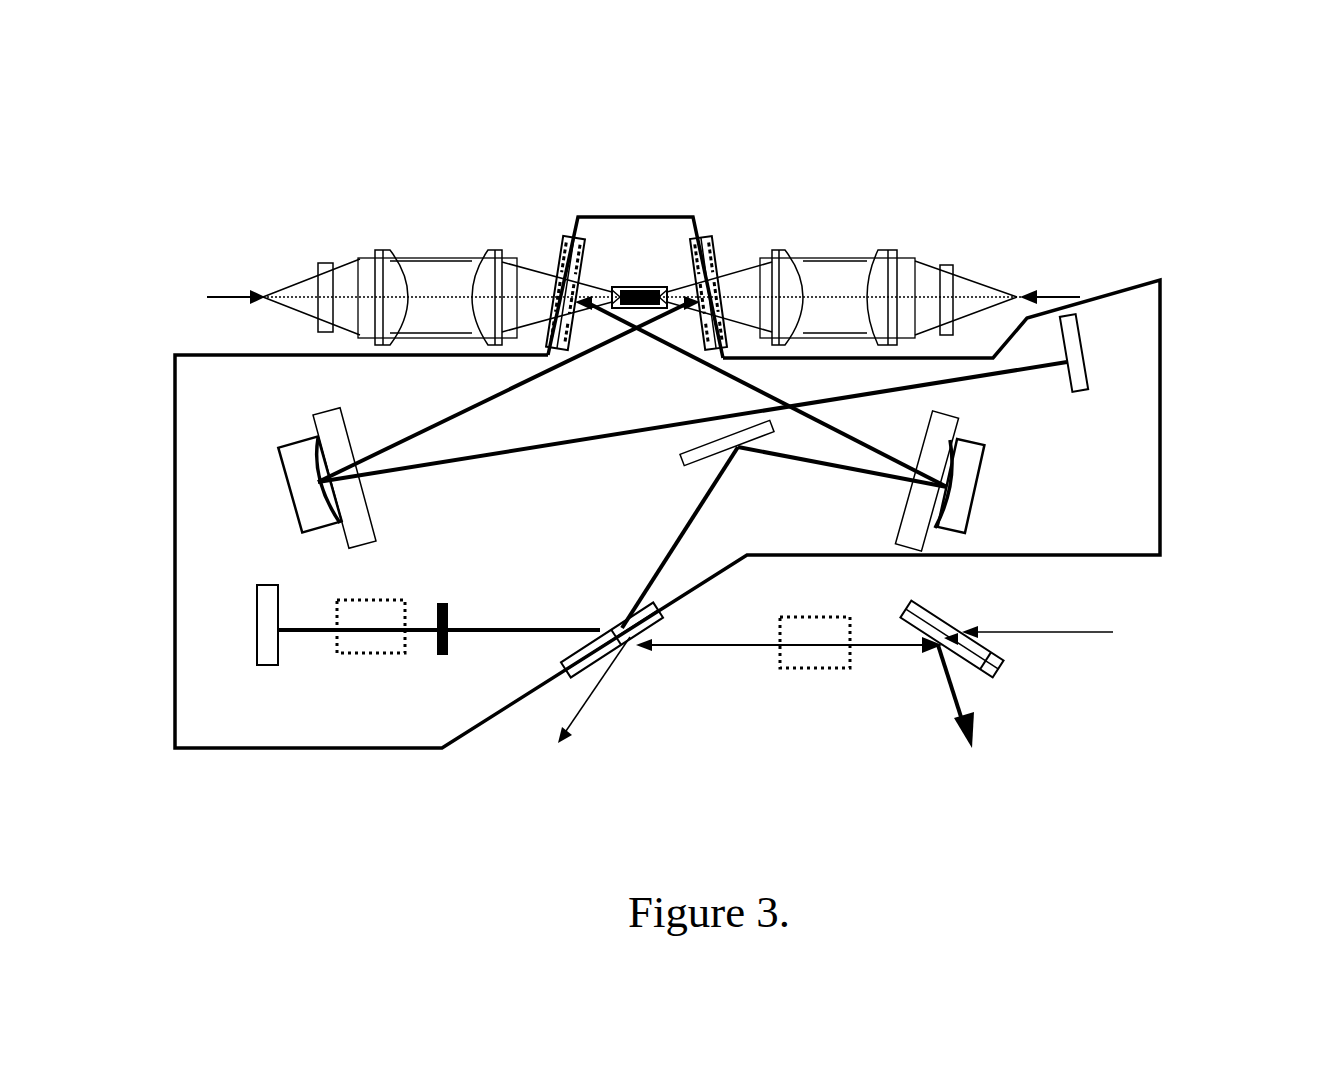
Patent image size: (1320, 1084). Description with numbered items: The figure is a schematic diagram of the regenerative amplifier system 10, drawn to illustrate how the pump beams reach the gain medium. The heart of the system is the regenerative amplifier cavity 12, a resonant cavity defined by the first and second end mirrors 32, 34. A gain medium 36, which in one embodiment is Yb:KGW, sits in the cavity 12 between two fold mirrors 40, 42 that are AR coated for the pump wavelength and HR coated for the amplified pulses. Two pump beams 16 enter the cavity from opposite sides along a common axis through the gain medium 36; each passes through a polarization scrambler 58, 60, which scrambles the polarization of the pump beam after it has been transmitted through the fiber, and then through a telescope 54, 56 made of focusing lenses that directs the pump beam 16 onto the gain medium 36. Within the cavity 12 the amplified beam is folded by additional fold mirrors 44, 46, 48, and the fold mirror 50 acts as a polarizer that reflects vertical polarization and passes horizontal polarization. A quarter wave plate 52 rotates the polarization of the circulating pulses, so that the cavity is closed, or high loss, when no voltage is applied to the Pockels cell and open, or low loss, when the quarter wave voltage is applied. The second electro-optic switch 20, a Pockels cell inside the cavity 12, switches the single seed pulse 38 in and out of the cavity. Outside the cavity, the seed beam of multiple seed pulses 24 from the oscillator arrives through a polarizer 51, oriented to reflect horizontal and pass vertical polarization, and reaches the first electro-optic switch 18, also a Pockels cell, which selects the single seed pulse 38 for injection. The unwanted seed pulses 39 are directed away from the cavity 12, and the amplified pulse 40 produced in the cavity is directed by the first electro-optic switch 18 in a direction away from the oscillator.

The regenerative amplifier system 10 is at (240, 818).
The regenerative amplifier cavity 12 is at (238, 737).
The pump beam 16 is at (222, 293).
The first electro-optic switch 18 is at (823, 660).
The second electro-optic switch 20 is at (353, 647).
The seed pulses 24 is at (1100, 637).
The first end mirror 32 is at (1080, 373).
The second end mirror 34 is at (267, 587).
The gain medium 36 is at (648, 290).
The single seed pulse 38 is at (550, 588).
The unwanted seed pulses 39 is at (587, 707).
The amplified pulse 40 is at (563, 240).
The fold mirror 42 is at (712, 243).
The fold mirror 44 is at (972, 472).
The fold mirror 46 is at (298, 448).
The fold mirror 48 is at (682, 455).
The fold mirror 50 is at (678, 570).
The polarizer 51 is at (1003, 660).
The quarter wave plate 52 is at (450, 588).
The telescope 54 is at (490, 265).
The telescope 56 is at (892, 263).
The polarization scrambler 58 is at (325, 268).
The polarization scrambler 60 is at (948, 270).